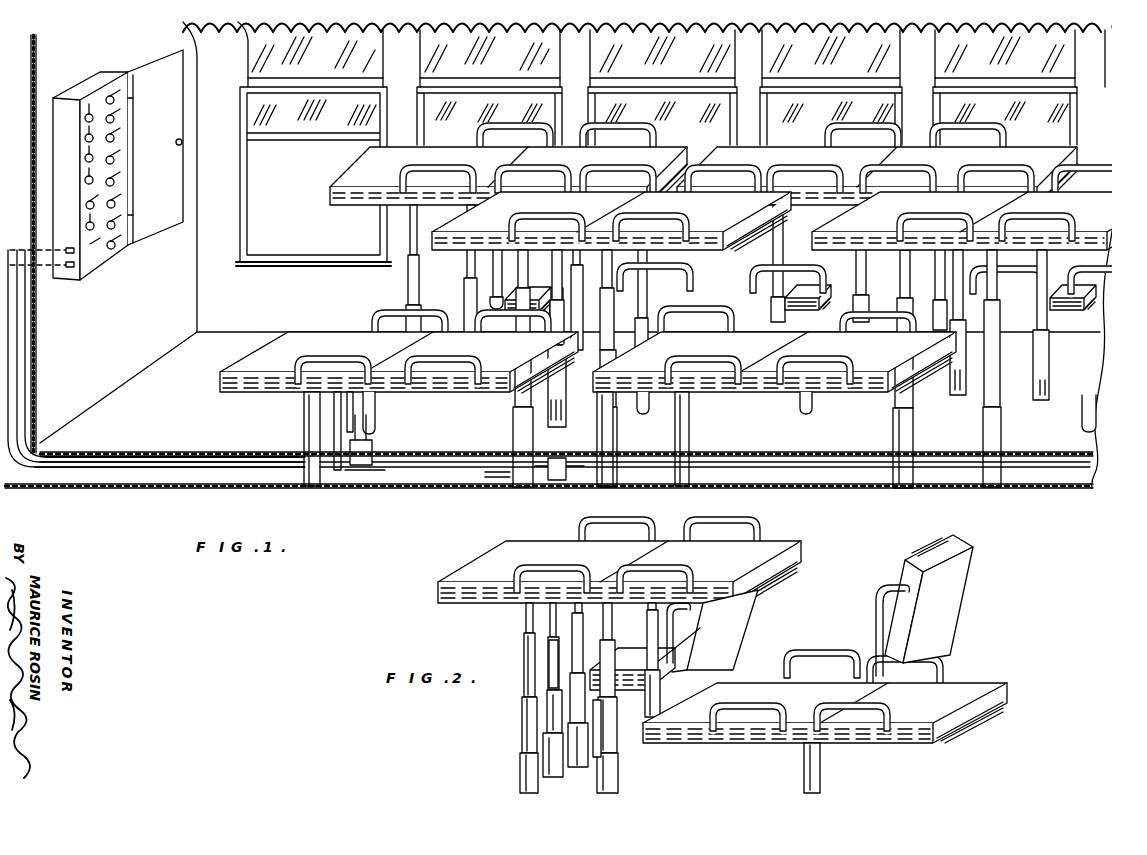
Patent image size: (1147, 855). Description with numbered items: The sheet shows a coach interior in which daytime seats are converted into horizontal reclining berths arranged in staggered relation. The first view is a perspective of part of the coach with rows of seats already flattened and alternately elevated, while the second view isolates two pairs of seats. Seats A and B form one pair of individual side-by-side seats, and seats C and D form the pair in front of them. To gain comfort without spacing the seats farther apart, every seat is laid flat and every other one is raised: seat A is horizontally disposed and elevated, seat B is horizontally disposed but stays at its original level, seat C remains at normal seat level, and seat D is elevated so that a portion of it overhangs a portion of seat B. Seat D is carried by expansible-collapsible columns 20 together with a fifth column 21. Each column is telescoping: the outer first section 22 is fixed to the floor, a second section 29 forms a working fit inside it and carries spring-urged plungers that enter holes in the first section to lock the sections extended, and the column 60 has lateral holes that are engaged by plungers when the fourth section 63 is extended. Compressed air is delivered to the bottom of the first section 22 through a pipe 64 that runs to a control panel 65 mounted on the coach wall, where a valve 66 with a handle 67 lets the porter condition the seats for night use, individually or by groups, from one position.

In FIG. 2, the expansible-collapsible columns 20 is at (522, 732).
In FIG. 2, the fifth column 21 is at (549, 676).
In FIG. 1, the first section 22 is at (913, 429).
In FIG. 2, the first section 22 is at (520, 770).
In FIG. 1, the second section 29 is at (406, 310).
In FIG. 2, the second section 29 is at (522, 712).
In FIG. 1, the column 60 is at (408, 271).
In FIG. 2, the column 60 is at (524, 661).
In FIG. 1, the fourth section 63 is at (410, 231).
In FIG. 2, the fourth section 63 is at (526, 621).
In FIG. 1, the pipe 64 is at (262, 474).
In FIG. 1, the control panel 65 is at (100, 262).
In FIG. 1, the valve 66 is at (72, 258).
In FIG. 1, the handle 67 is at (104, 252).
In FIG. 2, the seat A is at (960, 583).
In FIG. 2, the seat B is at (975, 688).
In FIG. 2, the seat C is at (740, 633).
In FIG. 2, the seat D is at (775, 550).